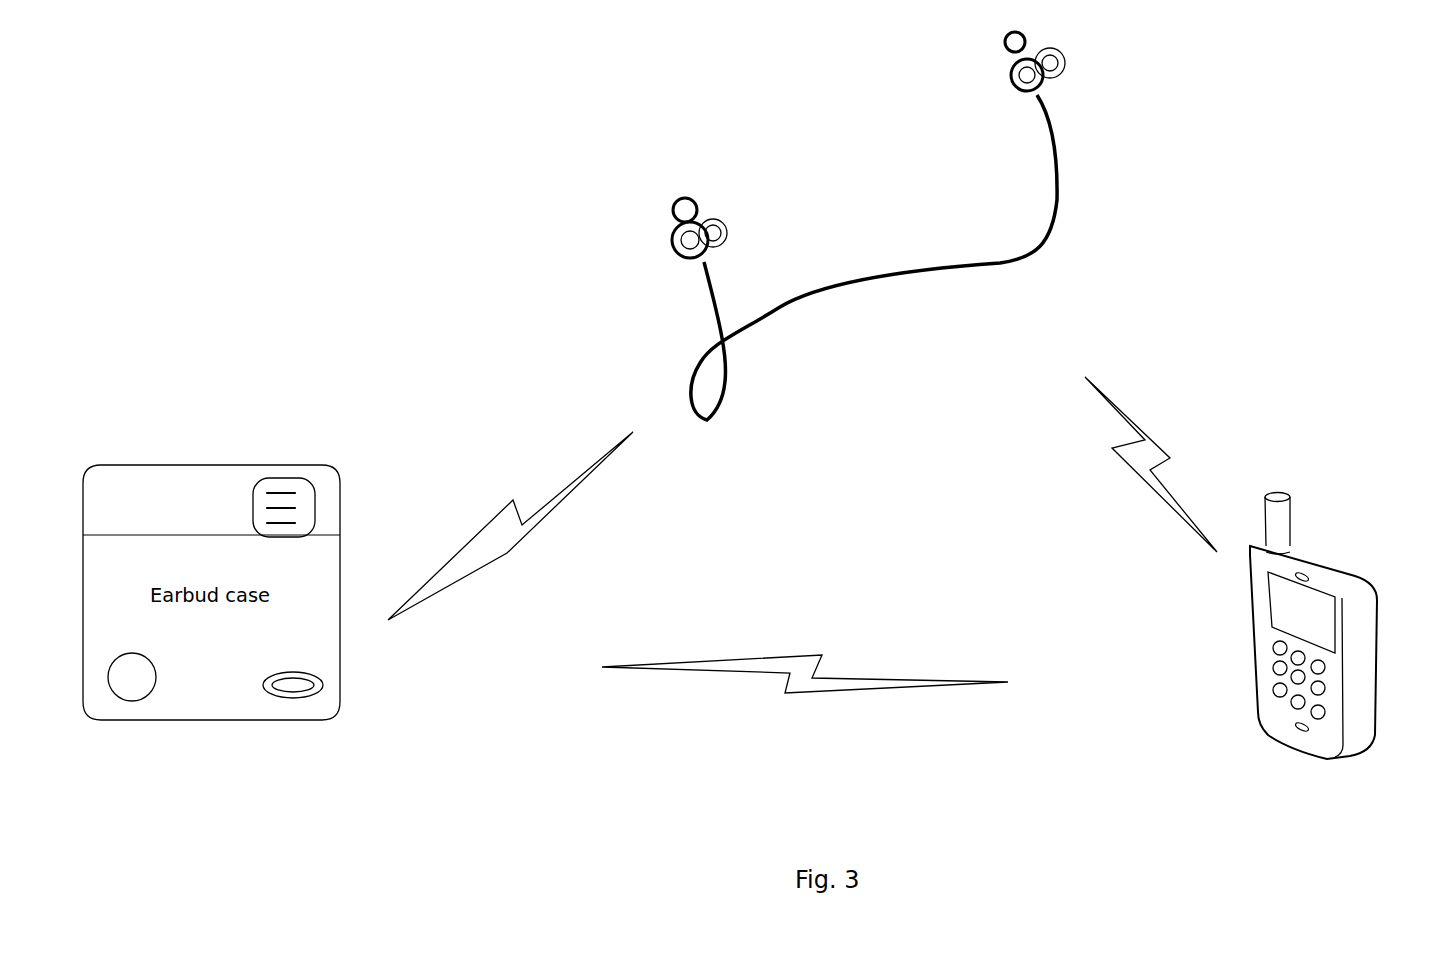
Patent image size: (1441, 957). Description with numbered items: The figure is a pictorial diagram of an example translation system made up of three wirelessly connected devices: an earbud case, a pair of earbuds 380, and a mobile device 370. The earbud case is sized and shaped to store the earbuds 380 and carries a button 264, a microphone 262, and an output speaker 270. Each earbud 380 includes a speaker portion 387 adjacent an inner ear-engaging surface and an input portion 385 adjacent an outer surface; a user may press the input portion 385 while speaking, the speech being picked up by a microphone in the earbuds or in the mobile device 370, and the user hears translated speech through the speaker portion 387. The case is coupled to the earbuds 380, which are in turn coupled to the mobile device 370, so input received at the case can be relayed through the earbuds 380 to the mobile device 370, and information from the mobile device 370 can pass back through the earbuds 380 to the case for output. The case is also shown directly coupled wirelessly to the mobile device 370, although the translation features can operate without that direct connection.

The microphone 262 is at (297, 700).
The button 264 is at (100, 708).
The output speaker 270 is at (282, 480).
The mobile device 370 is at (1358, 568).
The earbuds 380 is at (831, 226).
The input portion 385 is at (678, 258).
The speaker portion 387 is at (728, 237).